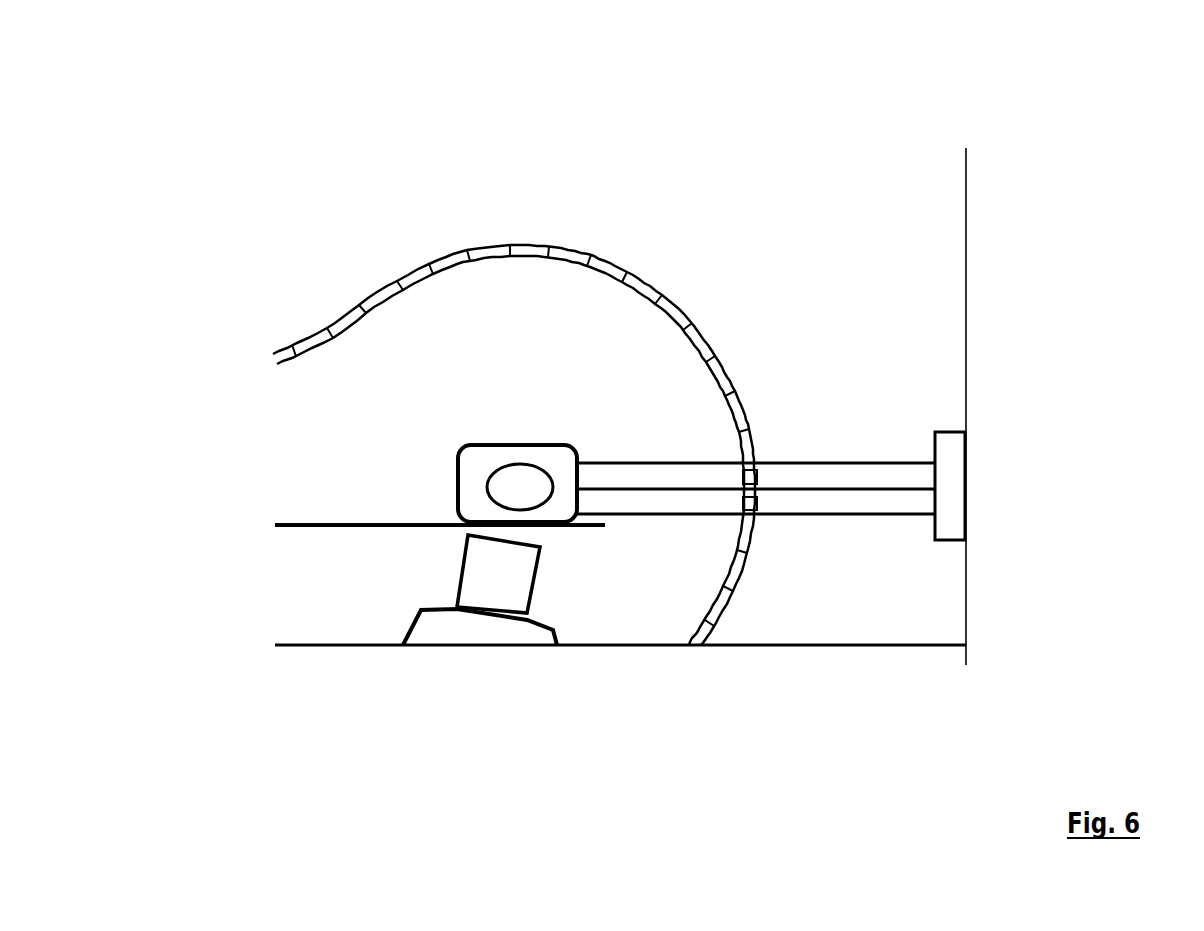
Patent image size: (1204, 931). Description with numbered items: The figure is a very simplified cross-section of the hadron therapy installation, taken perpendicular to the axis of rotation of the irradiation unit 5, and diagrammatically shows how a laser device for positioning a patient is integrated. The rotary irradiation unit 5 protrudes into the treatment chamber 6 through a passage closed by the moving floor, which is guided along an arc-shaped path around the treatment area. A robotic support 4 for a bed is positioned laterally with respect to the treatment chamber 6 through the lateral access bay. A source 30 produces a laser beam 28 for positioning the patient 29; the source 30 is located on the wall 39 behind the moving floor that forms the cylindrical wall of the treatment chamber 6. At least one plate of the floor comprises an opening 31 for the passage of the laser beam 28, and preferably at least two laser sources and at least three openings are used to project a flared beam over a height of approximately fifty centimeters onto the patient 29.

The robotic support 4 is at (330, 528).
The irradiation unit 5 is at (495, 582).
The treatment chamber 6 is at (515, 445).
The laser beam 28 is at (640, 514).
The patient 29 is at (458, 459).
The source 30 is at (952, 458).
The opening 31 is at (770, 503).
The wall 39 is at (963, 170).